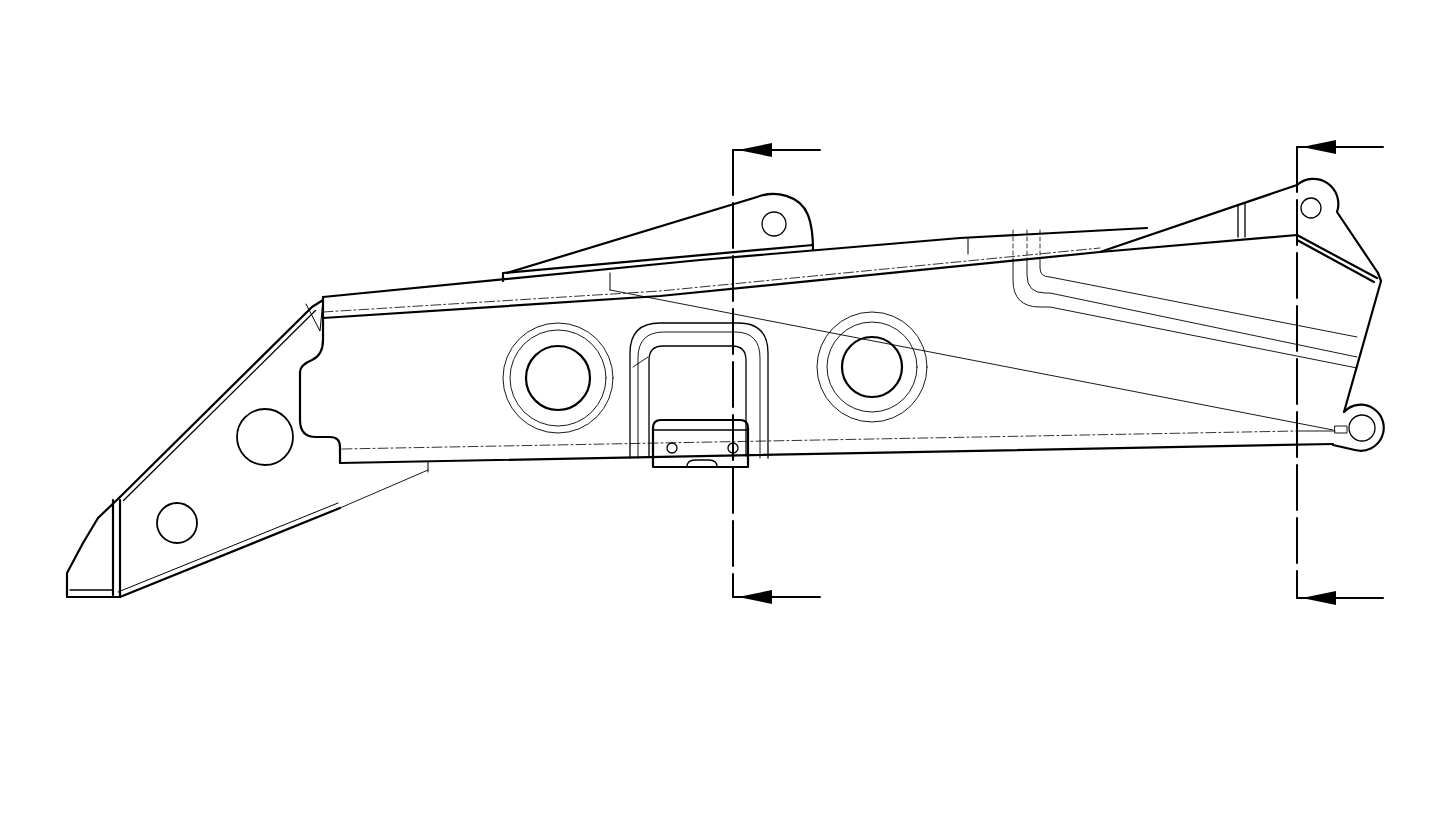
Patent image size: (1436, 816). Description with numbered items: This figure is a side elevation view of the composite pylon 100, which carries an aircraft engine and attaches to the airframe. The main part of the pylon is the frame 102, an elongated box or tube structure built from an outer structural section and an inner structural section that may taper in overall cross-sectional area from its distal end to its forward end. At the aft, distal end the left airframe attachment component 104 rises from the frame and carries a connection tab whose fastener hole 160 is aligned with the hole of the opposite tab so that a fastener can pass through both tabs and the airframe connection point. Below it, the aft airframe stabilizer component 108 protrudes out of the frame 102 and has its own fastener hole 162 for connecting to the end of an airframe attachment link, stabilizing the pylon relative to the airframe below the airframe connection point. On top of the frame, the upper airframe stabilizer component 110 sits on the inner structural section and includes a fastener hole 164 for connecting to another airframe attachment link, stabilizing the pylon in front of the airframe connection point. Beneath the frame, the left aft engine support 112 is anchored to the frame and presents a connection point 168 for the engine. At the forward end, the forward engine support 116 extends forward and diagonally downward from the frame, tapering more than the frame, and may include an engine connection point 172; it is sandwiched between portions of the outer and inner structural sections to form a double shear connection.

The composite pylon 100 is at (641, 61).
The frame 102 is at (411, 246).
The left airframe attachment component 104 is at (1185, 174).
The aft airframe stabilizer component 108 is at (1345, 476).
The upper airframe stabilizer component 110 is at (643, 198).
The left aft engine support 112 is at (673, 500).
The forward engine support 116 is at (328, 553).
The fastener hole 160 is at (1313, 211).
The fastener hole 162 is at (1363, 432).
The fastener hole 164 is at (780, 230).
The connection point 168 is at (735, 467).
The engine connection point 172 is at (88, 597).